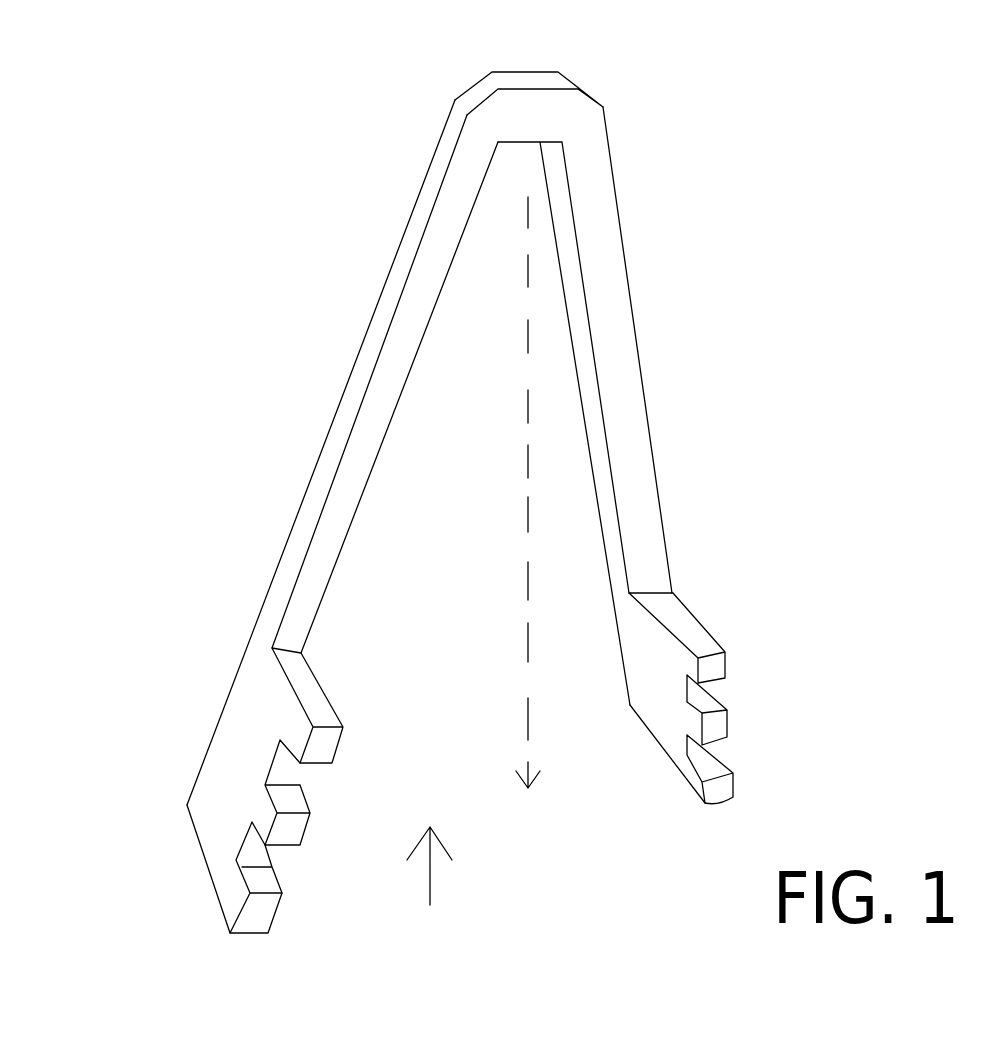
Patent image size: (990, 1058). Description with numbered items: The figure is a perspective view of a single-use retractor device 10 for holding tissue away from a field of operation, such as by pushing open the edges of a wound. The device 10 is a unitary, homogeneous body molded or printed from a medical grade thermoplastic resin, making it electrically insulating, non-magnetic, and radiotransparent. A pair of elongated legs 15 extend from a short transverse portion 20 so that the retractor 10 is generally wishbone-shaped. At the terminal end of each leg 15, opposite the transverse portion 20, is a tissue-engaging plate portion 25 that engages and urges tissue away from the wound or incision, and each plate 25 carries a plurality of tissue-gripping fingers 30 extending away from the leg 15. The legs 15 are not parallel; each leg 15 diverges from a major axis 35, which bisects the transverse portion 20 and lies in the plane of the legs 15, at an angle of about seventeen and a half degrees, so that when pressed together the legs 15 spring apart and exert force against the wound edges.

The retractor device 10 is at (429, 881).
The elongated leg 15 is at (425, 285).
The transverse portion 20 is at (527, 18).
The tissue-engaging plate portion 25 is at (243, 755).
The tissue-gripping fingers 30 is at (293, 730).
The major axis 35 is at (528, 762).